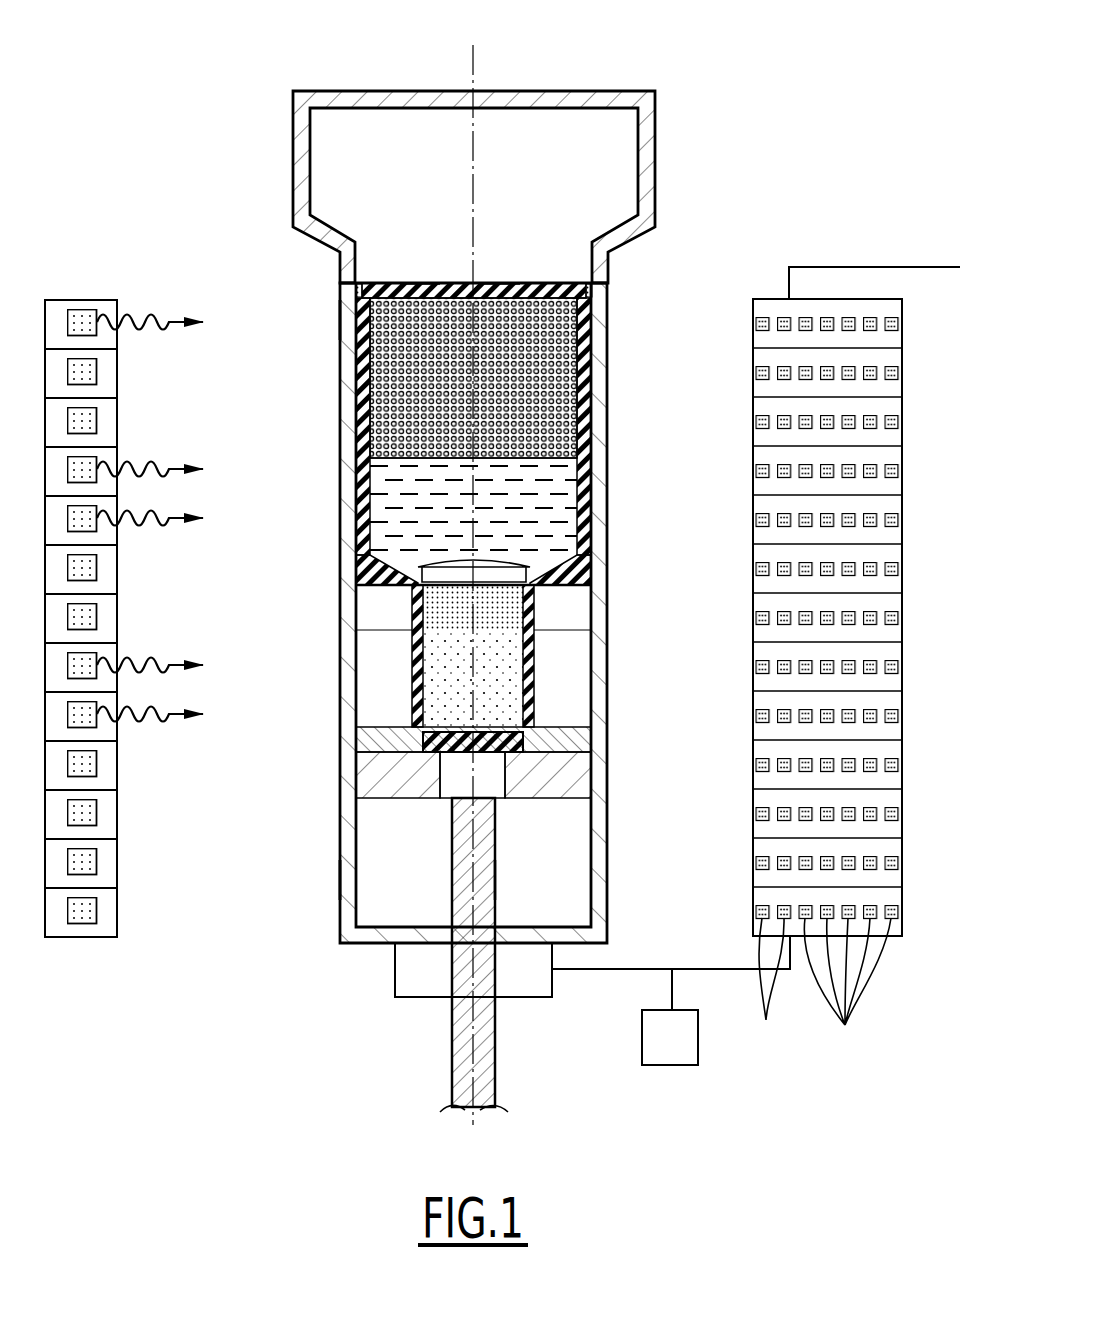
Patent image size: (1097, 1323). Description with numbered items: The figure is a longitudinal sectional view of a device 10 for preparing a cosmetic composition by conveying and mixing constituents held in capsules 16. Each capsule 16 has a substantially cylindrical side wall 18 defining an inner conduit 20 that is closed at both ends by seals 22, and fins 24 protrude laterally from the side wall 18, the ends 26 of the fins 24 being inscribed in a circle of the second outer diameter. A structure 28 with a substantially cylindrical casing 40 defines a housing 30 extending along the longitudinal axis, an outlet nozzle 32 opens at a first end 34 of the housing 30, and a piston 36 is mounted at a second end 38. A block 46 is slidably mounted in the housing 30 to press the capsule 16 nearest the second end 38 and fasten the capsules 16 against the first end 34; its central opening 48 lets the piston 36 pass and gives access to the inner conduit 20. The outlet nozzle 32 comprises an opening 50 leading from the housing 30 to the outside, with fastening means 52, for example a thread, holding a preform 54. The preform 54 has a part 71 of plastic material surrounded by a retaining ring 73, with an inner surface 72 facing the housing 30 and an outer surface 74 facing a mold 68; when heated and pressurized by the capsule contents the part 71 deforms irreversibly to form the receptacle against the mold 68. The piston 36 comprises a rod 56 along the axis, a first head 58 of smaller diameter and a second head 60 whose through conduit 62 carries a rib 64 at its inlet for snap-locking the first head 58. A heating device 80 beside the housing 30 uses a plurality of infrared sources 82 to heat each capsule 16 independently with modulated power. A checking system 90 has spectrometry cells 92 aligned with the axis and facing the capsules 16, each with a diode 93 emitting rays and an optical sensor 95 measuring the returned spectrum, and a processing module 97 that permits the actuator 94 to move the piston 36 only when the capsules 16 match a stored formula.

The device 10 is at (742, 277).
The capsule 16 is at (540, 395).
The side wall 18 is at (398, 548).
The inner conduit 20 is at (445, 504).
The seal 22 is at (410, 460).
The fins 24 is at (590, 655).
The ends of the fins 26 is at (565, 683).
The structure 28 is at (608, 835).
The housing 30 is at (383, 660).
The outlet nozzle 32 is at (594, 355).
The first end 34 is at (345, 318).
The piston 36 is at (508, 880).
The second end 38 is at (330, 873).
The casing 40 is at (598, 765).
The block 46 is at (395, 767).
The central opening 48 is at (455, 772).
The opening 50 is at (497, 280).
The fastening means 52 is at (597, 291).
The preform 54 is at (388, 283).
The rod 56 is at (480, 1033).
The first head 58 is at (560, 742).
The second head 60 is at (495, 605).
The through conduit 62 is at (362, 572).
The rib 64 is at (413, 605).
The mold 68 is at (578, 88).
The part made of plastic material 71 is at (462, 283).
The inner surface 72 is at (368, 378).
The retaining ring 73 is at (358, 293).
The outer surface 74 is at (418, 280).
The heating device 80 is at (126, 958).
The sources of infrared radiation 82 is at (82, 858).
The checking system 90 is at (900, 965).
The spectrometry cells 92 is at (905, 318).
The diode 93 is at (847, 989).
The actuator 94 is at (408, 998).
The optical sensor 95 is at (768, 989).
The processing module 97 is at (670, 1052).